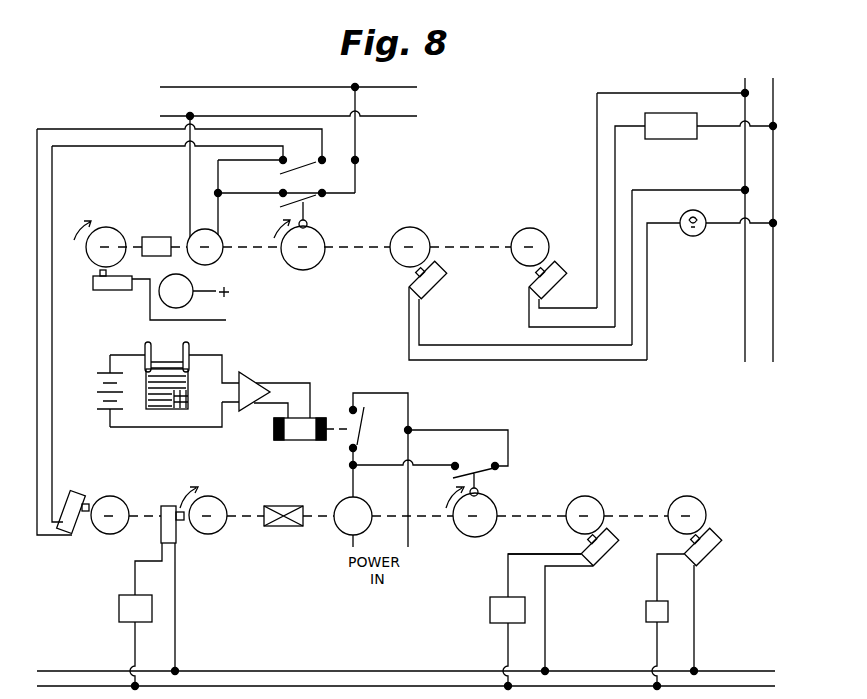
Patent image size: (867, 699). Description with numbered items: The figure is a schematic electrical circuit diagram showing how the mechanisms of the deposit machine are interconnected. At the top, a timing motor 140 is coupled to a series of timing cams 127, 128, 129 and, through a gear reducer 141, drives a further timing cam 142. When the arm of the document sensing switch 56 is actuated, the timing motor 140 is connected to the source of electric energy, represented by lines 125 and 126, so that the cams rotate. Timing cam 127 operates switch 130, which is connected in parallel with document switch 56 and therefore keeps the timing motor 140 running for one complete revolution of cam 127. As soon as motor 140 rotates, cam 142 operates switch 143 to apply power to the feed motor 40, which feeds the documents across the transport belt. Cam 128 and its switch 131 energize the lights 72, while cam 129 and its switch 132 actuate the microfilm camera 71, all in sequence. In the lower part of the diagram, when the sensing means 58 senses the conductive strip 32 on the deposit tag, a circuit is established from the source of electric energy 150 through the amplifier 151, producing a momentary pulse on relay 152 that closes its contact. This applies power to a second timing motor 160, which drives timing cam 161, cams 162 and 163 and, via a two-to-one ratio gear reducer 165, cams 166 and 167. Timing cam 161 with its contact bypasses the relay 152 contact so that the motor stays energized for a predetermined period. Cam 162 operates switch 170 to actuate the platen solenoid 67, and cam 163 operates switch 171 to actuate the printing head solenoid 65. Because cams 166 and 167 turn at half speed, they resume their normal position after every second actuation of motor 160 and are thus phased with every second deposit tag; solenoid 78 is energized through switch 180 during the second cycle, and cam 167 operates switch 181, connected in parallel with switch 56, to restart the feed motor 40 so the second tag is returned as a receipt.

The source of electric energy 125 is at (420, 89).
The source of electric energy 126 is at (420, 118).
The sensing switch 56 is at (306, 170).
The switch 130 is at (316, 202).
The timing cam 142 is at (116, 235).
The gear reducer 141 is at (160, 236).
The timing motor 140 is at (212, 260).
The timing cam 127 is at (305, 268).
The cam 128 is at (415, 232).
The cam 129 is at (530, 228).
The switch 131 is at (436, 290).
The switch 132 is at (556, 290).
The microfilm camera 71 is at (681, 134).
The lights 72 is at (683, 215).
The switch 143 is at (108, 291).
The feed motor 40 is at (186, 305).
The sensing means 58 is at (188, 346).
The conductive strip 32 is at (180, 378).
The source of electric energy 150 is at (95, 386).
The amplifier 151 is at (250, 380).
The relay 152 is at (300, 442).
The switch 181 is at (82, 476).
The cam 167 is at (112, 497).
The cam 166 is at (210, 496).
The switch 180 is at (177, 540).
The two-to-one ratio gear reducer 165 is at (284, 528).
The timing motor 160 is at (358, 502).
The timing cam 161 is at (492, 500).
The cam 162 is at (598, 502).
The cam 163 is at (702, 504).
The switch 170 is at (604, 562).
The sensor 171 is at (708, 562).
The solenoid 78 is at (145, 616).
The platen solenoid 67 is at (517, 618).
The printing head solenoid 65 is at (660, 624).